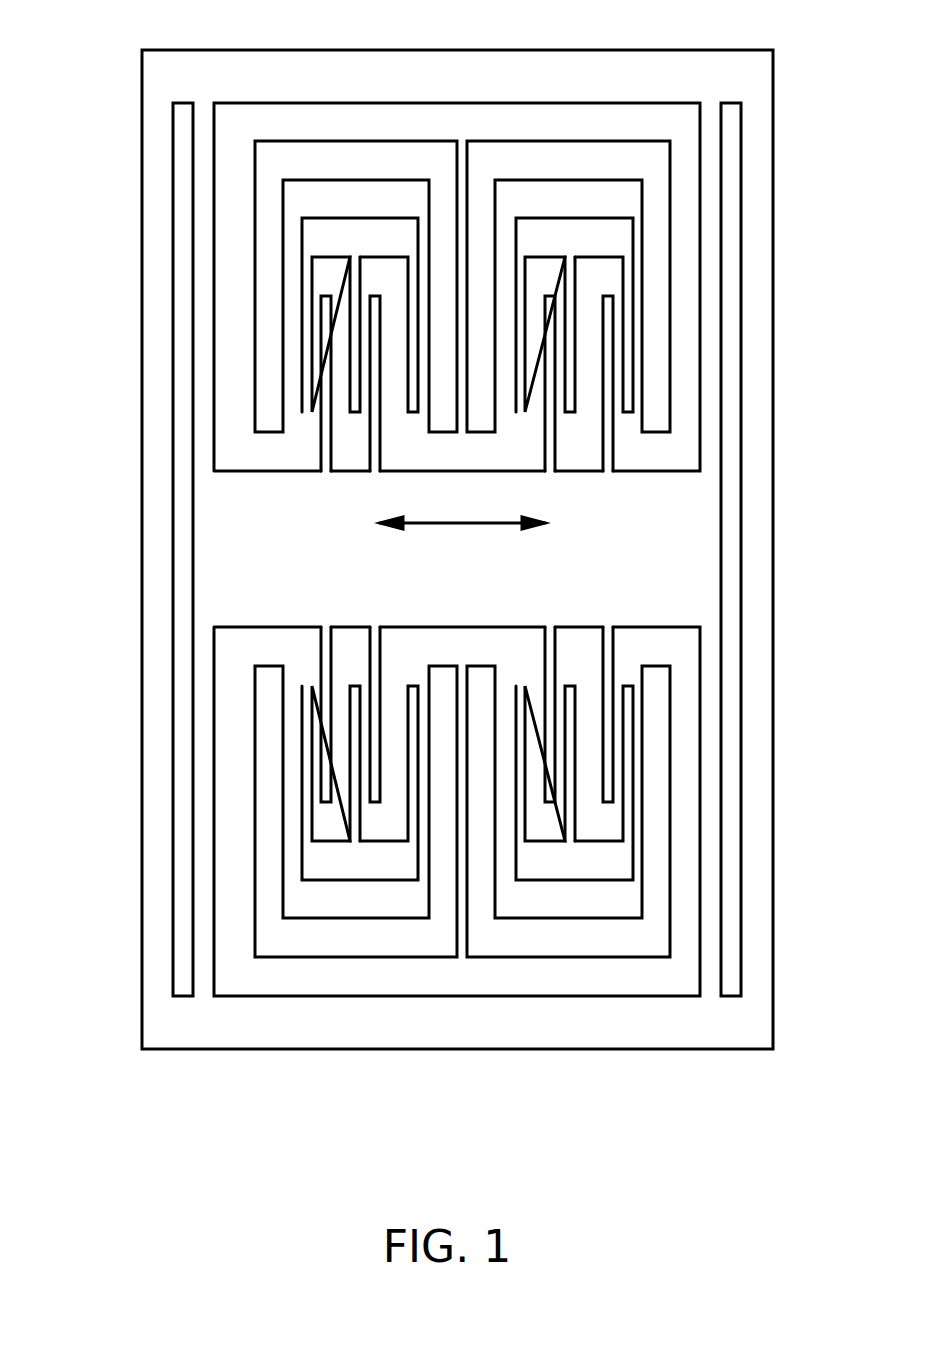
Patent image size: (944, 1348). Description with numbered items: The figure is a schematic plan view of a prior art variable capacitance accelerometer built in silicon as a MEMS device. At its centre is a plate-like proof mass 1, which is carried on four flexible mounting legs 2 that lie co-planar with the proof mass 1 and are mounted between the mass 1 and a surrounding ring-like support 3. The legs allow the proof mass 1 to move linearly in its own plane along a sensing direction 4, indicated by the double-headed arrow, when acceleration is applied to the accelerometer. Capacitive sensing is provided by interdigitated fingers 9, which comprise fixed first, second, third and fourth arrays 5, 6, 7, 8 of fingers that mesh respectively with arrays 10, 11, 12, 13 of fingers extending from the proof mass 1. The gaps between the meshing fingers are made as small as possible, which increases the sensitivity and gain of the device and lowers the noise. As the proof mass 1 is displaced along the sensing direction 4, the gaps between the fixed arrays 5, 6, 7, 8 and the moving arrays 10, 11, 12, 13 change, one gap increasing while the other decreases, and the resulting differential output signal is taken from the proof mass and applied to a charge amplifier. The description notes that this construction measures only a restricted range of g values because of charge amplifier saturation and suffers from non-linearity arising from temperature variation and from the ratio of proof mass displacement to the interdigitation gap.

The proof mass 1 is at (242, 558).
The flexible mounting legs 2 is at (207, 108).
The ring-like support 3 is at (152, 71).
The sensing direction 4 is at (462, 512).
The first array 5 is at (359, 829).
The second array 6 is at (573, 828).
The third array 7 is at (367, 281).
The fourth array 8 is at (578, 281).
The interdigitated fingers 9 is at (302, 297).
The array 10 is at (320, 664).
The array 11 is at (613, 662).
The array 12 is at (321, 432).
The array 13 is at (613, 432).